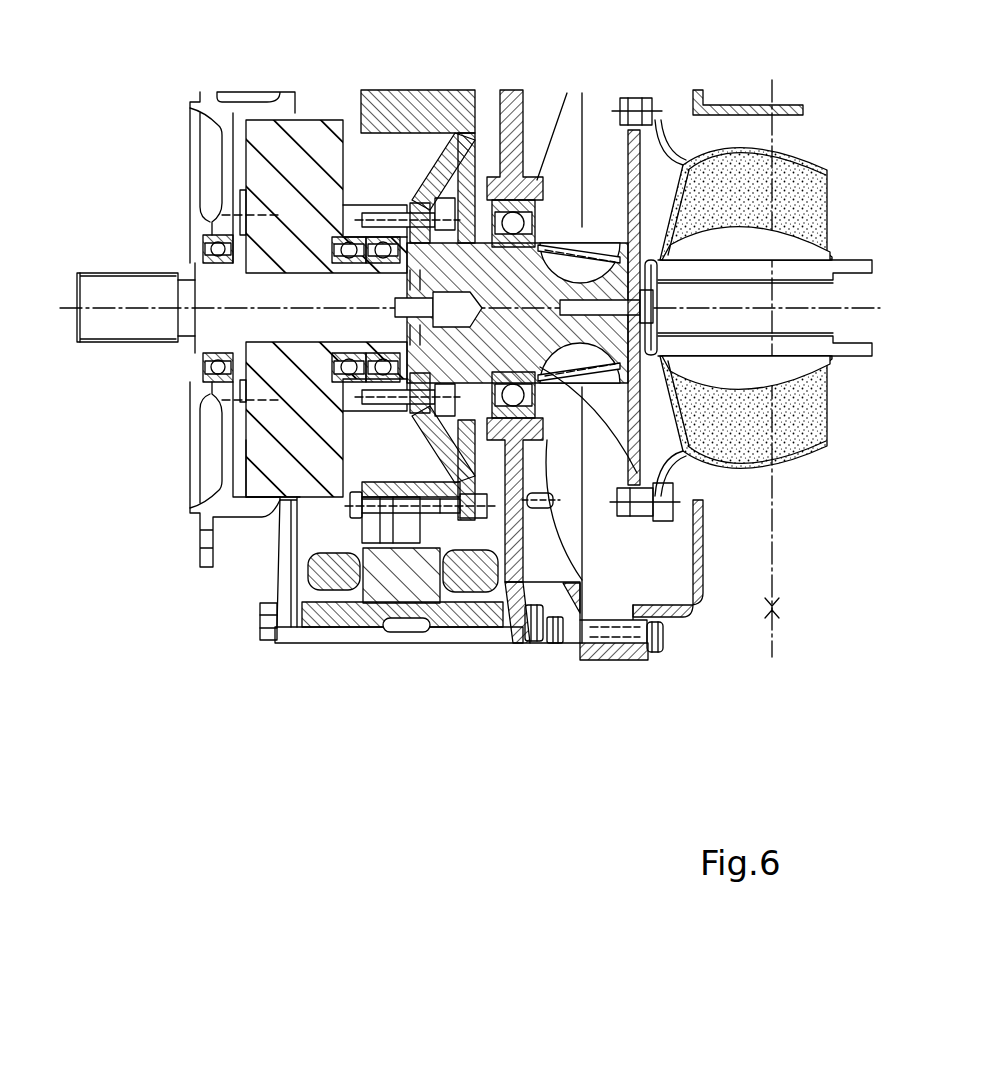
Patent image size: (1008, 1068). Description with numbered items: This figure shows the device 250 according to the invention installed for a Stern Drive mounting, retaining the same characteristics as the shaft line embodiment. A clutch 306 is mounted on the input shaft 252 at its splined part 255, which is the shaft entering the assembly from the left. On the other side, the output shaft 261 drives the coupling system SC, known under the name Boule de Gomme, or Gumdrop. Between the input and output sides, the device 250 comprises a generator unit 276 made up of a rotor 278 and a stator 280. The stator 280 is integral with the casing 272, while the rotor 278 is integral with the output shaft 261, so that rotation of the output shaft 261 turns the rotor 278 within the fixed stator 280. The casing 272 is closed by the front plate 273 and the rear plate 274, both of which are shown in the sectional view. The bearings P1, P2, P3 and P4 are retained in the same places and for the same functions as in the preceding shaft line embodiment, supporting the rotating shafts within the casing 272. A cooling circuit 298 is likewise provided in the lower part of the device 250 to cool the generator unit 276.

The splined part 255 is at (125, 320).
The input shaft 252 is at (275, 325).
The clutch 306 is at (262, 475).
The bearing P1 is at (213, 237).
The bearing P2 is at (527, 197).
The bearing P3 is at (383, 237).
The bearing P4 is at (352, 212).
The coupling system SC is at (743, 308).
The output shaft 261 is at (665, 463).
The rear plate 274 is at (520, 587).
The casing 272 is at (490, 637).
The generator unit 276 is at (447, 625).
The front plate 273 is at (295, 637).
The device 250 is at (369, 612).
The rotor 278 is at (383, 605).
The cooling circuit 298 is at (397, 630).
The stator 280 is at (452, 595).